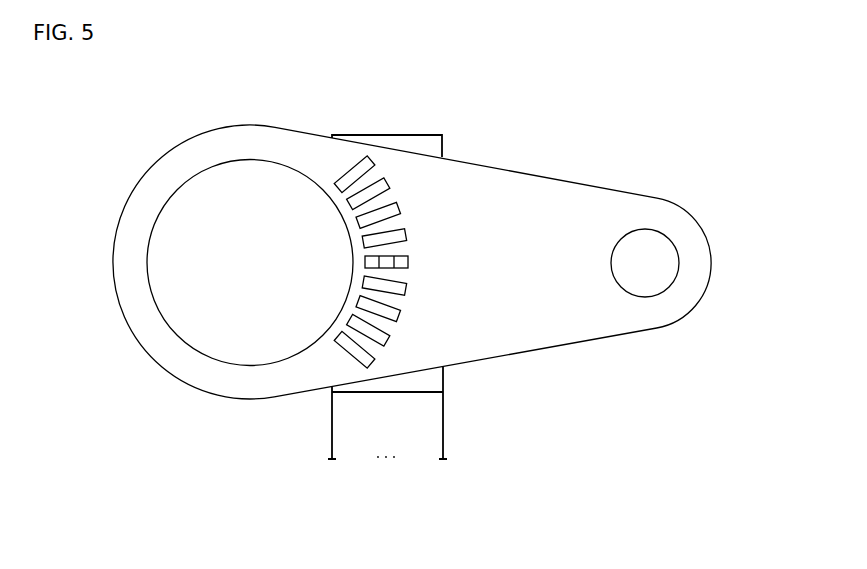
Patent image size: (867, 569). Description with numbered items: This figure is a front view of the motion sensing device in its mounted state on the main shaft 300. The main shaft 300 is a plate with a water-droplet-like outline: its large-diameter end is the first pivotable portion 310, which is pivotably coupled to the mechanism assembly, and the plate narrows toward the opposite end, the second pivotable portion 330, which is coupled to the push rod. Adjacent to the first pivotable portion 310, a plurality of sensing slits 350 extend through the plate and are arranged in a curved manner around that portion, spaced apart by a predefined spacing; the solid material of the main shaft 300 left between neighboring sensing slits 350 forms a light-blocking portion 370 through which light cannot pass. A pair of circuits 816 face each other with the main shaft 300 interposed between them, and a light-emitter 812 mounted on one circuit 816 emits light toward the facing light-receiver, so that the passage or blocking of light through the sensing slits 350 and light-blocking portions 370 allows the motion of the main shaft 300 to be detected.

The main shaft 300 is at (545, 503).
The first pivotable portion 310 is at (245, 335).
The second pivotable portion 330 is at (642, 273).
The sensing slits 350 is at (378, 337).
The light-blocking portion 370 is at (389, 301).
The light-emitter 812 is at (386, 264).
The circuit 816 is at (425, 147).